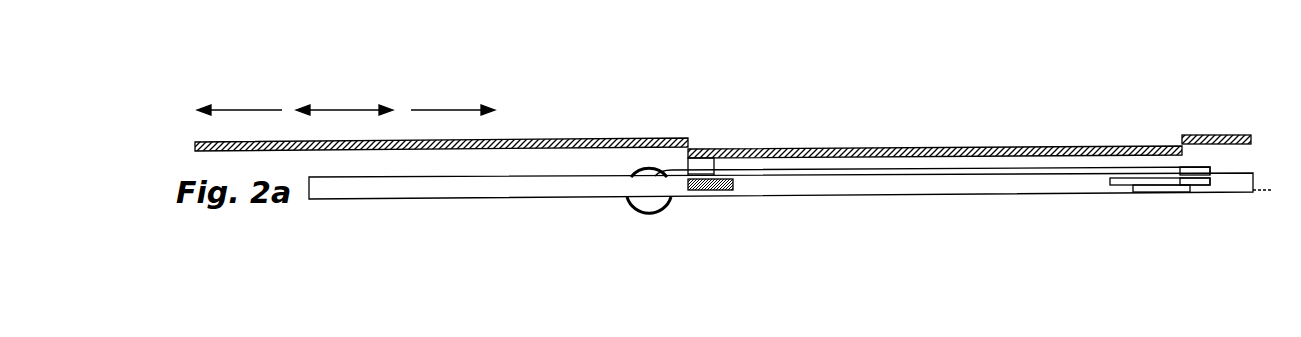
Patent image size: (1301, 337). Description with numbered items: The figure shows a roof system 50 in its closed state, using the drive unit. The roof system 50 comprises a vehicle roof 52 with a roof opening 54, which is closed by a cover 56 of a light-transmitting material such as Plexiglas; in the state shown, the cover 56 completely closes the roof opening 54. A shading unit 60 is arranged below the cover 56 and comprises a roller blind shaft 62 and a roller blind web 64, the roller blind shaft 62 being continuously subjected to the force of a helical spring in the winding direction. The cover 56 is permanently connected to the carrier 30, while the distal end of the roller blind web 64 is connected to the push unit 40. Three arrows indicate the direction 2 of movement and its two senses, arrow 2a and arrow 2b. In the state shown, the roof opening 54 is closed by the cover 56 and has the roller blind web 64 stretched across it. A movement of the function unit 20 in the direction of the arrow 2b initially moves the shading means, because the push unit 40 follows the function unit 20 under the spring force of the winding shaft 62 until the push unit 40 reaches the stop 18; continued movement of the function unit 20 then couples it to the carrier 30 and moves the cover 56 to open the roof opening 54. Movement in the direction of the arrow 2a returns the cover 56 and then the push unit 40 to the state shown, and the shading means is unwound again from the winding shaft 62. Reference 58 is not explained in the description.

The direction 2 is at (333, 110).
The arrow 2a is at (438, 110).
The arrow 2b is at (233, 110).
The stop 18 is at (795, 174).
The function unit 20 is at (1150, 184).
The carrier 30 is at (708, 190).
The push unit 40 is at (1193, 178).
The roof system 50 is at (1120, 97).
The vehicle roof 52 is at (602, 138).
The roof opening 54 is at (699, 147).
The cover 56 is at (833, 148).
The housing end 58 is at (852, 334).
The shading unit 60 is at (672, 214).
The roller blind shaft 62 is at (650, 203).
The roller blind web 64 is at (985, 168).